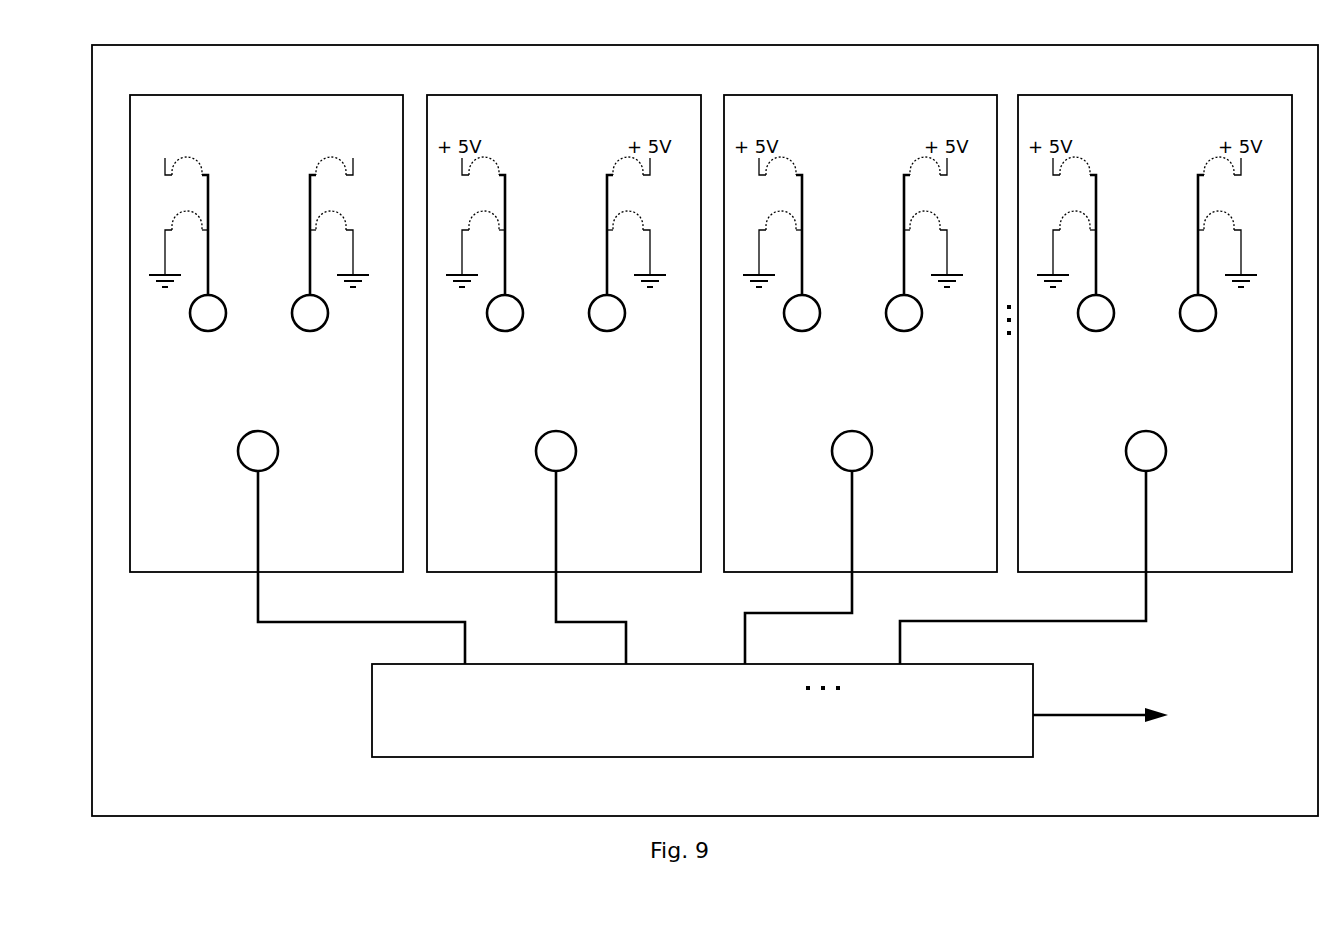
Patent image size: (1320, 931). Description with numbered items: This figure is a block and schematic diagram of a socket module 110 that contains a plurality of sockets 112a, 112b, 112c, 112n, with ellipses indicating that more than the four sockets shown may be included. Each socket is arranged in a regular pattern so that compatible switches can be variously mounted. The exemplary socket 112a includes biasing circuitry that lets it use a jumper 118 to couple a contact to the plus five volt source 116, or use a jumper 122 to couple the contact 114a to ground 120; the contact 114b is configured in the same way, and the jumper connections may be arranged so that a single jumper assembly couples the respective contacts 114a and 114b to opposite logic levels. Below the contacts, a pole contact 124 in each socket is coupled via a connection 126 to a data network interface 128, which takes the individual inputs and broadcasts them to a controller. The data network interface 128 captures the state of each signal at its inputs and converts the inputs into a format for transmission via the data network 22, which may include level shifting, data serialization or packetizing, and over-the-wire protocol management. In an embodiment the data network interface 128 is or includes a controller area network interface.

The socket module 110 is at (1025, 46).
The socket 112a is at (335, 95).
The socket 112b is at (615, 95).
The socket 112c is at (900, 95).
The socket 112n is at (1190, 95).
The contact 114a is at (212, 333).
The contact 114b is at (314, 333).
The +5V voltage supply 116 is at (168, 137).
The jumper 118 is at (200, 163).
The ground 120 is at (153, 273).
The jumper 122 is at (178, 212).
The pole contact 124 is at (250, 433).
The connection 126 is at (332, 623).
The data network interface 128 is at (478, 760).
The data network 22 is at (1133, 717).